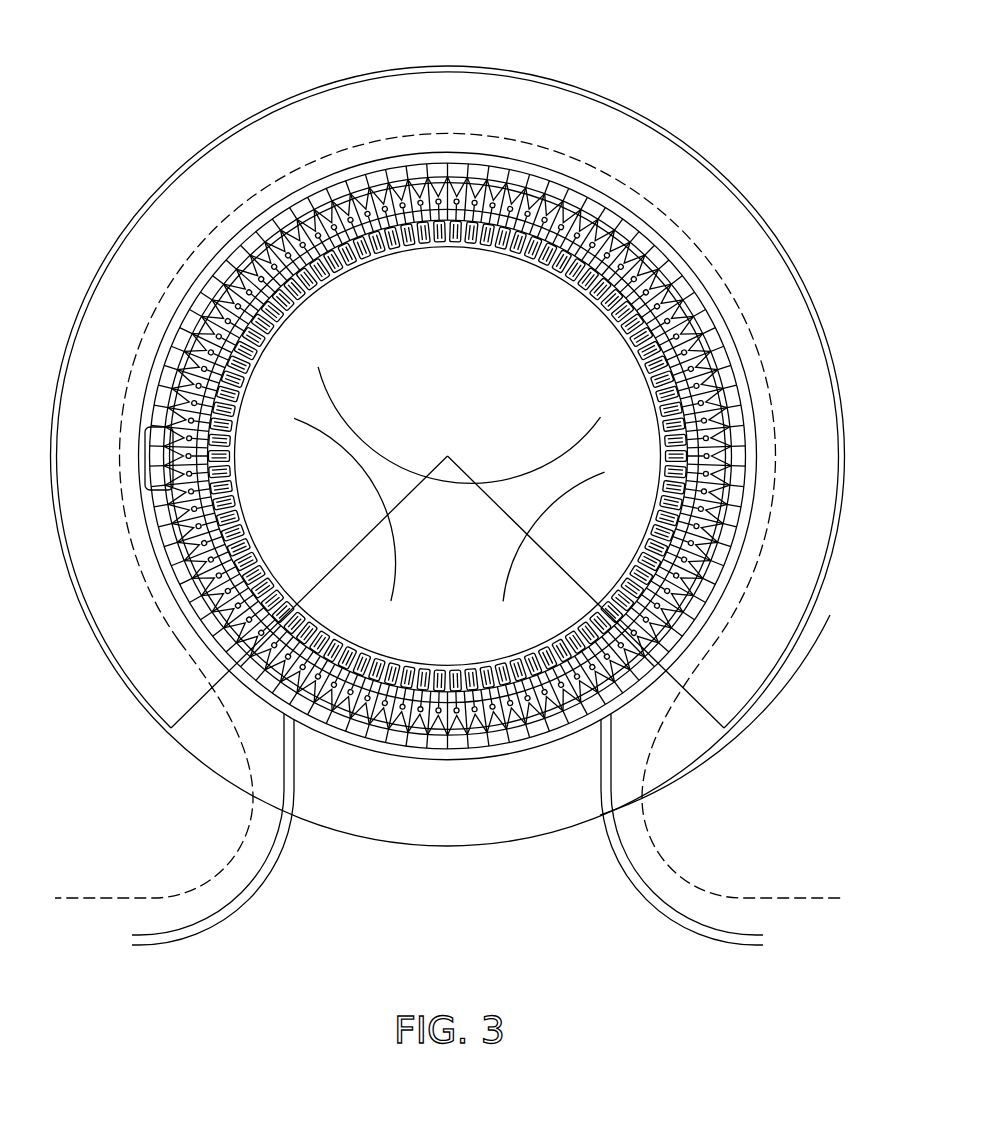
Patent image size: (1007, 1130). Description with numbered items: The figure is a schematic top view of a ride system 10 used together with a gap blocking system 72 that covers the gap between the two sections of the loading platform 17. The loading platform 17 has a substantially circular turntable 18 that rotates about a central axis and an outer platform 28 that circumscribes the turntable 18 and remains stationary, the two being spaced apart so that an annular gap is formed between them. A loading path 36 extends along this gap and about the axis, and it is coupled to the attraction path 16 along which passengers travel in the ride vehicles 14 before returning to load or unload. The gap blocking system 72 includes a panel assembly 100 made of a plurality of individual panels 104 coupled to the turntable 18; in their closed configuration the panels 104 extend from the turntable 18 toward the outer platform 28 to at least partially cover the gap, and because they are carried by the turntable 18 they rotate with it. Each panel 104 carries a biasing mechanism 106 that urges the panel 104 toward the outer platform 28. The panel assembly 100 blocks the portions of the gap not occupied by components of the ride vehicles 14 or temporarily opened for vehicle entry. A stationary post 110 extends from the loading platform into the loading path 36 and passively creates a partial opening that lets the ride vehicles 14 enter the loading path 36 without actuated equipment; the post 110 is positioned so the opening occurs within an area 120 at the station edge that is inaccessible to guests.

The ride system 10 is at (221, 87).
The ride vehicles 14 is at (232, 415).
The attraction path 16 is at (604, 858).
The loading platform 17 is at (114, 232).
The turntable 18 is at (688, 303).
The outer platform 28 is at (730, 683).
The loading path 36 is at (243, 700).
The gap blocking system 72 is at (112, 426).
The panel assembly 100 is at (663, 416).
The panels 104 is at (690, 362).
The biasing mechanism 106 is at (618, 367).
The stationary post 110 is at (283, 706).
The area 120 is at (576, 602).